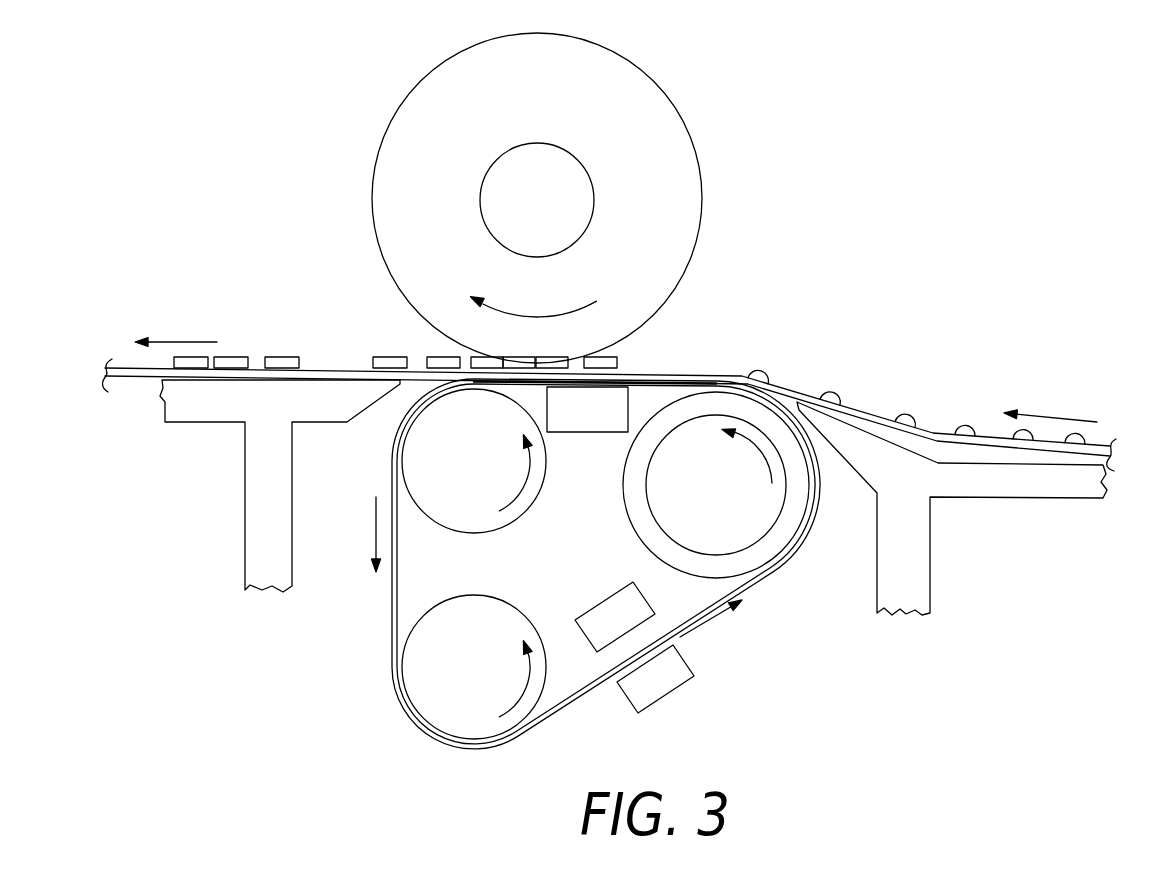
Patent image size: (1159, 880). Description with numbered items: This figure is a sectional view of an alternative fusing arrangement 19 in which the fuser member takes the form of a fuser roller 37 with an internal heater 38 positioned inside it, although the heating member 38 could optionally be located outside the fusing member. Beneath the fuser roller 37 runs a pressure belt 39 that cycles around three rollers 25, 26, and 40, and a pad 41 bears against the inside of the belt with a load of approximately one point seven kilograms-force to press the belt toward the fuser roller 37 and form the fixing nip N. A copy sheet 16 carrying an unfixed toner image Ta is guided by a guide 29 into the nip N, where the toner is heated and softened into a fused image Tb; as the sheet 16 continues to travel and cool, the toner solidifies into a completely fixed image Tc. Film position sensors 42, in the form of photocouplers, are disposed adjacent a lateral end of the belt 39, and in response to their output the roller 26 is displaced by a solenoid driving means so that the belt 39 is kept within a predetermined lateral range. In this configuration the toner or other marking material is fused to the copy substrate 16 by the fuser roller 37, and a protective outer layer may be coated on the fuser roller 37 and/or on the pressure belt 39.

The fusing system 19 is at (298, 104).
The fuser roller 37 is at (650, 82).
The internal heater 38 is at (578, 188).
The copy sheet 16 is at (131, 366).
The pressure belt 39 is at (519, 388).
The roller 26 is at (472, 520).
The roller 40 is at (422, 688).
The roller 25 is at (758, 512).
The pad 41 is at (595, 433).
The film position sensor 42 is at (606, 602).
The guide 29 is at (975, 500).
The fixed toner image Tc is at (283, 353).
The softened or fused toner image Tb is at (483, 355).
The unfixed toner image Ta is at (966, 428).
The nip N is at (577, 355).